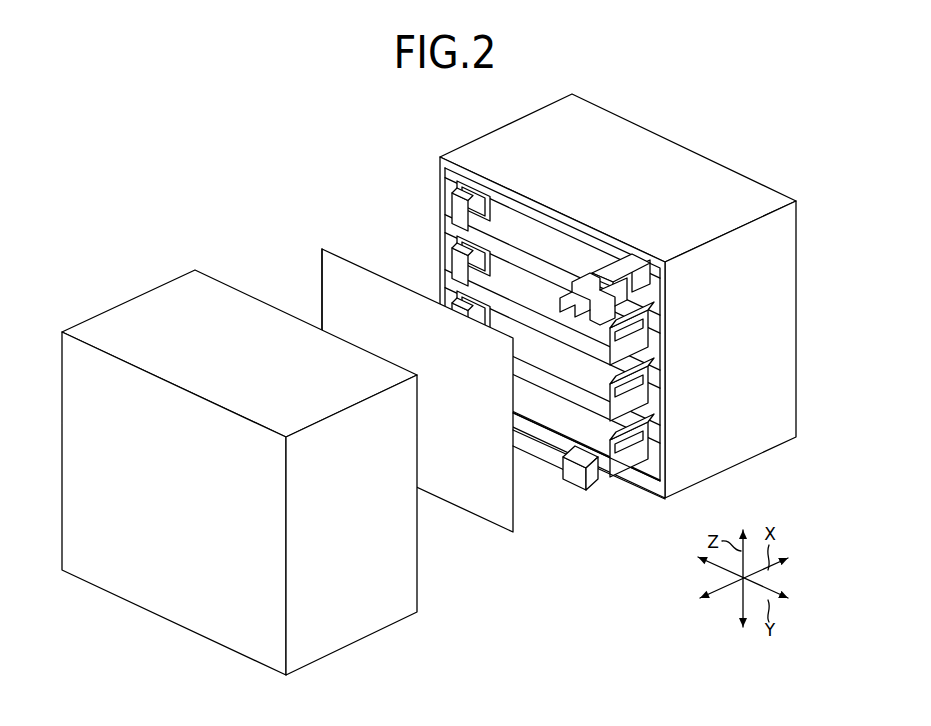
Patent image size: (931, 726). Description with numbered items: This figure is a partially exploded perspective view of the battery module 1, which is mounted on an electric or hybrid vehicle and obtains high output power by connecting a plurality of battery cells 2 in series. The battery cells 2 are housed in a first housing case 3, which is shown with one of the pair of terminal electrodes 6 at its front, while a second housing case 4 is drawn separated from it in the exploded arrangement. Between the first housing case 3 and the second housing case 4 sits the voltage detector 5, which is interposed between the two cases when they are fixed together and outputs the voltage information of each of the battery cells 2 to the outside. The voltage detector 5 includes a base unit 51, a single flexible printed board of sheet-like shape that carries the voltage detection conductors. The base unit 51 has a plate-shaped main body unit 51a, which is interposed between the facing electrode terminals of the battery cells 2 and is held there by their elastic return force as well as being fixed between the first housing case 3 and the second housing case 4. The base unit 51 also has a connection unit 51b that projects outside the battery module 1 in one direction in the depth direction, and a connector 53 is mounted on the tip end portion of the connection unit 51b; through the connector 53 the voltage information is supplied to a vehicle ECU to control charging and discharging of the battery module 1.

The battery module 1 is at (292, 186).
The battery cells 2 is at (575, 420).
The first housing case 3 is at (732, 162).
The second housing case 4 is at (147, 291).
The voltage detector 5 is at (455, 378).
The terminal electrode 6 is at (615, 313).
The base unit 51 is at (455, 391).
The main body unit 51a is at (329, 277).
The connection unit 51b is at (535, 460).
The connector 53 is at (577, 492).